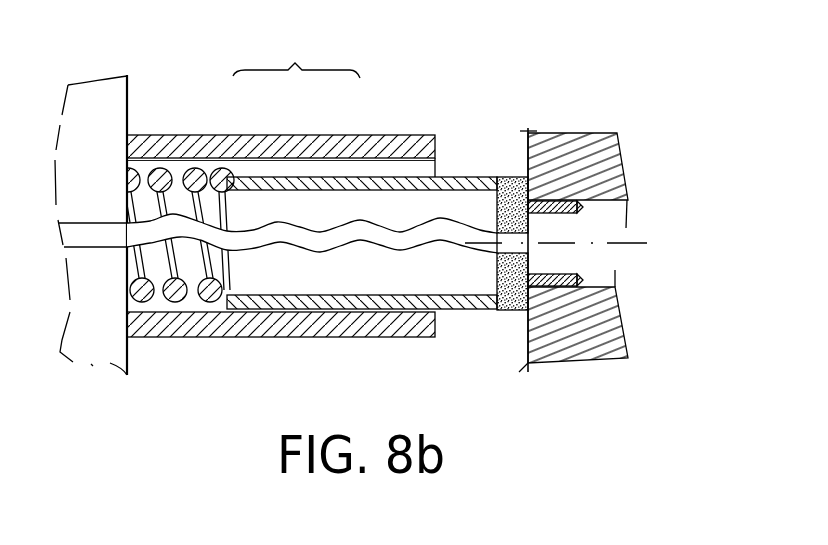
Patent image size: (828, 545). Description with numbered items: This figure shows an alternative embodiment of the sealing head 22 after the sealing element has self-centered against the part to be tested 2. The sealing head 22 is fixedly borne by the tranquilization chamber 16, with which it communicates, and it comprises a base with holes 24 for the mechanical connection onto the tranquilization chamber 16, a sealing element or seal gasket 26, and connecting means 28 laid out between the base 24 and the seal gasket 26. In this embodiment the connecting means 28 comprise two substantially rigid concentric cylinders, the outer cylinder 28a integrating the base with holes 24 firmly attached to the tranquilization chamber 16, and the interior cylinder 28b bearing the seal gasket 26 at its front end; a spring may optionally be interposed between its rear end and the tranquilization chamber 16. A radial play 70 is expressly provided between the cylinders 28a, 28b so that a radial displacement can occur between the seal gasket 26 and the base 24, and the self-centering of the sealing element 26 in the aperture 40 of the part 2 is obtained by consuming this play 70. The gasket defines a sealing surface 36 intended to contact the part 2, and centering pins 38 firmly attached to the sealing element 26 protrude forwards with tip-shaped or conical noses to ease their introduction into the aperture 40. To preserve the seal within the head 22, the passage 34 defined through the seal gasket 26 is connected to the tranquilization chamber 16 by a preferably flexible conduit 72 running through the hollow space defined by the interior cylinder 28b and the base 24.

The part to be tested 2 is at (605, 245).
The tranquilization chamber 16 is at (106, 92).
The sealing head 22 is at (190, 86).
The base with holes 24 is at (281, 193).
The sealing element/gasket 26 is at (515, 177).
The connecting means 28 is at (296, 58).
The outer cylinder 28a is at (240, 142).
The interior cylinder 28b is at (320, 187).
The passage 34 is at (512, 248).
The sealing surface 36 is at (540, 182).
The centering pins 38 is at (573, 209).
The aperture 40 is at (603, 279).
The radial play 70 is at (407, 163).
The flexible conduit 72 is at (322, 246).